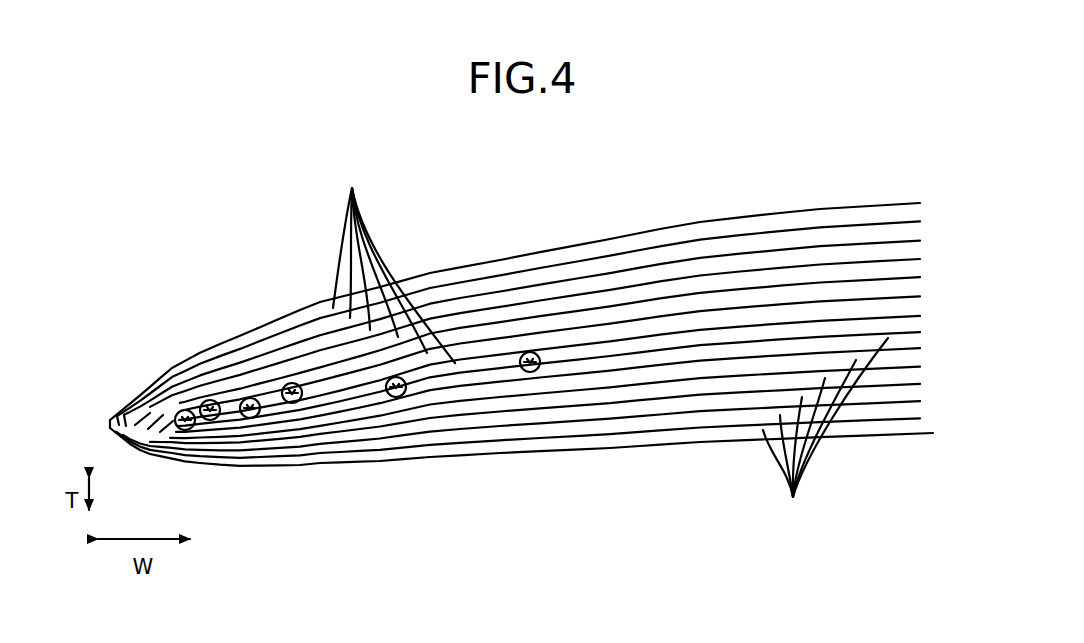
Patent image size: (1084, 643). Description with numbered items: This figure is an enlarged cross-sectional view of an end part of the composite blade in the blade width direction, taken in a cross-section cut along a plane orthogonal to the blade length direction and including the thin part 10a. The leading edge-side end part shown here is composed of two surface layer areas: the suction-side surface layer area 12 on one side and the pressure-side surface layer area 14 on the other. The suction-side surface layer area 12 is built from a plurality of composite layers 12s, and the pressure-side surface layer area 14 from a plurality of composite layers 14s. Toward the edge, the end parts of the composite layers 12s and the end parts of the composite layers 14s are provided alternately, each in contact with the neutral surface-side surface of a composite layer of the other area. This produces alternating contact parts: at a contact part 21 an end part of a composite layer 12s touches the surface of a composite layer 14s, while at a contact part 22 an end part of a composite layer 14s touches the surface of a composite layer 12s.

The thin part 10a is at (239, 228).
The suction-side surface layer area 12 is at (497, 249).
The composite layers in the suction-side surface layer area 12s is at (394, 264).
The pressure-side surface layer area 14 is at (739, 446).
The composite layers in the pressure-side surface layer area 14s is at (825, 432).
The contact part 21 is at (202, 435).
The contact part 22 is at (291, 381).